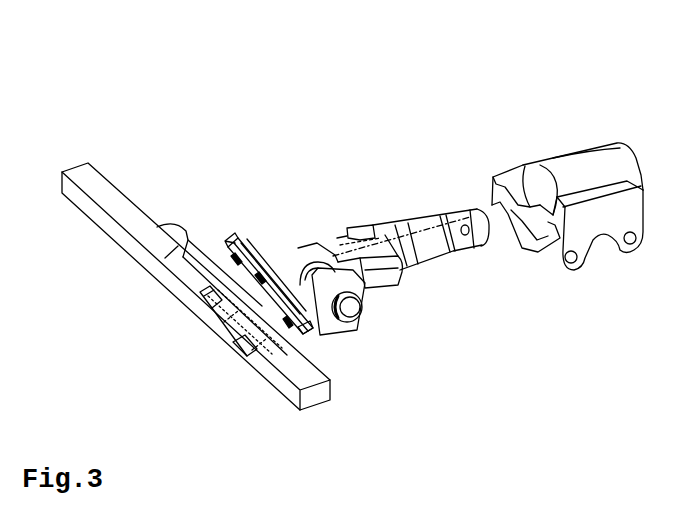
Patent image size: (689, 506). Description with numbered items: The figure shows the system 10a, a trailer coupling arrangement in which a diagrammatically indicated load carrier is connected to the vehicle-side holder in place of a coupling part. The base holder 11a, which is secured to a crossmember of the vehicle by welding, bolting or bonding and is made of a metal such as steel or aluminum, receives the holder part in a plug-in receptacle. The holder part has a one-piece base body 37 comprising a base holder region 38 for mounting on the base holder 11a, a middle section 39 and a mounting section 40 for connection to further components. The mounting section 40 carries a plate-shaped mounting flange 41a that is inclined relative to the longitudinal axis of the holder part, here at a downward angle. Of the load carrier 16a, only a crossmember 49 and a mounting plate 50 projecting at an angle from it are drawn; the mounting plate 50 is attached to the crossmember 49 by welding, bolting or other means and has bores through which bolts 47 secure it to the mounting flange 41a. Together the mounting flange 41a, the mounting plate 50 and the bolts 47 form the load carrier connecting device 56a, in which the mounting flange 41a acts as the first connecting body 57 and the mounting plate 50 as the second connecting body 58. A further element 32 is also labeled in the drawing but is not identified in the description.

The system 10a is at (262, 124).
The base holder 11a is at (526, 157).
The load carrier 16a is at (121, 206).
The cylinder 32 is at (422, 233).
The base body 37 is at (347, 249).
The base holder region 38 is at (428, 262).
The middle section 39 is at (370, 297).
The mounting section 40 is at (258, 240).
The mounting flange 41a is at (247, 240).
The bolts 47 is at (236, 340).
The crossmember 49 is at (106, 218).
The mounting plate 50 is at (183, 238).
The load carrier connecting device 56a is at (309, 337).
The first connecting body 57 is at (237, 239).
The second connecting body 58 is at (189, 236).